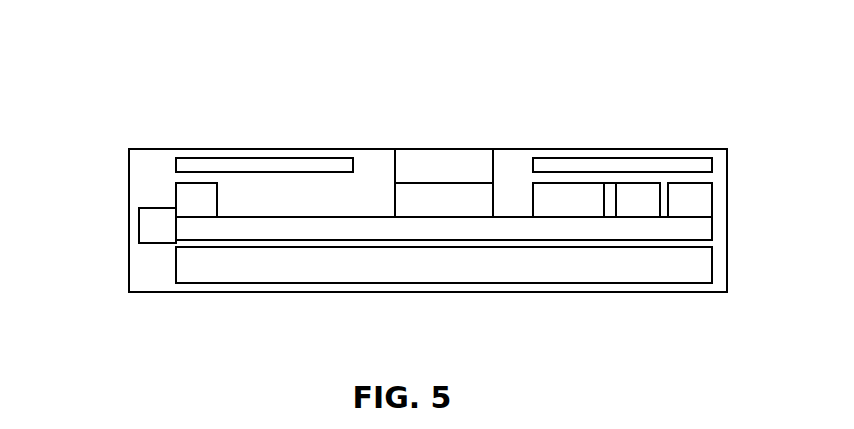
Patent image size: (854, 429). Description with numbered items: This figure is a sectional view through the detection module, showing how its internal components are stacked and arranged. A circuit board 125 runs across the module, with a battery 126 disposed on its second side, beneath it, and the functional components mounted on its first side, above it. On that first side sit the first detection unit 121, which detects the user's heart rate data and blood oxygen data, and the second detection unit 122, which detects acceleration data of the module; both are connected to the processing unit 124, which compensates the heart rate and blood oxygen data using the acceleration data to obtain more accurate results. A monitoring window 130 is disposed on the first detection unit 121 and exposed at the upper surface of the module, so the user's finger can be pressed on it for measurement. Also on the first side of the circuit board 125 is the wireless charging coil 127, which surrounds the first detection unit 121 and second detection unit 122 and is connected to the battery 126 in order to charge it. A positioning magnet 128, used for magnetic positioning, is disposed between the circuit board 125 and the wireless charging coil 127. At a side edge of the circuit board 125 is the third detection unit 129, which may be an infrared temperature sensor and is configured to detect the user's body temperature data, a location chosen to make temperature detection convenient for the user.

The first detection unit 121 is at (473, 208).
The second detection unit 122 is at (641, 207).
The processing unit 124 is at (543, 208).
The circuit board 125 is at (532, 230).
The battery 126 is at (440, 270).
The wireless charging coil 127 is at (263, 165).
The positioning magnet 128 is at (192, 197).
The third detection unit 129 is at (155, 230).
The monitoring window 130 is at (421, 170).